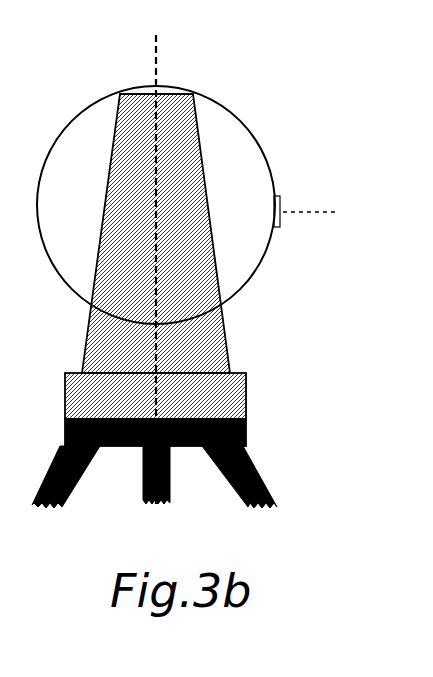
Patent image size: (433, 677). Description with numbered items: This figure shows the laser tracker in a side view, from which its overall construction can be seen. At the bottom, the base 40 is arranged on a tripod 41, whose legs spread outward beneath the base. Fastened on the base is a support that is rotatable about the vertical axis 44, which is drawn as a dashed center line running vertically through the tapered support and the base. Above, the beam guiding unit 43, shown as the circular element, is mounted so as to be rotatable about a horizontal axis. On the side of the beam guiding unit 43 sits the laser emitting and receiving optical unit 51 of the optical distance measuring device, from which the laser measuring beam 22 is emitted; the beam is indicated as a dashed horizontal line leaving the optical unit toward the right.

The laser measuring beam 22 is at (334, 212).
The base 40 is at (238, 402).
The tripod 41 is at (255, 493).
The beam guiding unit 43 is at (235, 250).
The vertical axis 44 is at (157, 82).
The laser emitting and receiving optical unit 51 is at (278, 203).